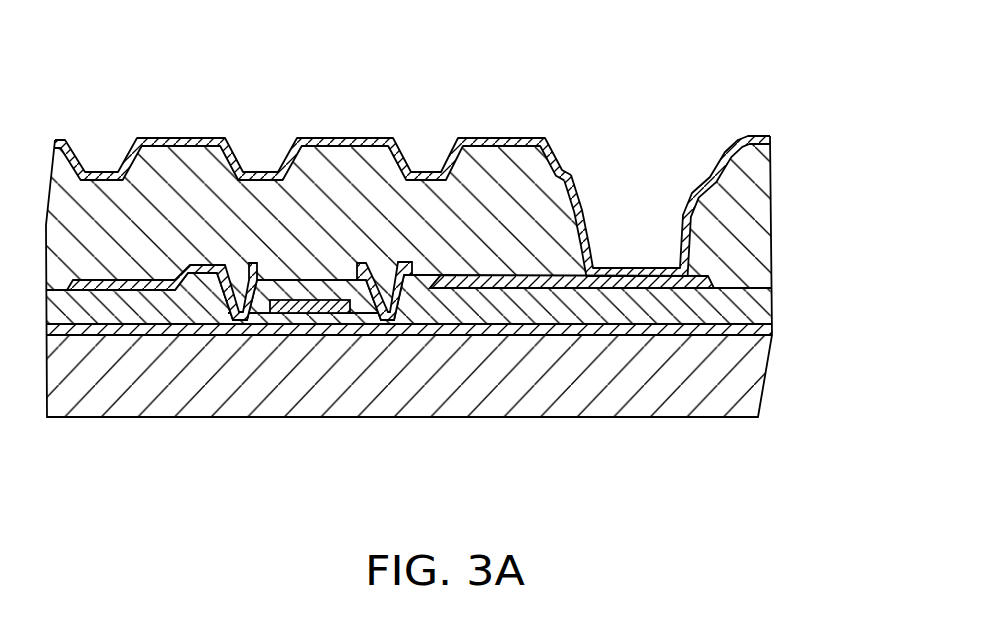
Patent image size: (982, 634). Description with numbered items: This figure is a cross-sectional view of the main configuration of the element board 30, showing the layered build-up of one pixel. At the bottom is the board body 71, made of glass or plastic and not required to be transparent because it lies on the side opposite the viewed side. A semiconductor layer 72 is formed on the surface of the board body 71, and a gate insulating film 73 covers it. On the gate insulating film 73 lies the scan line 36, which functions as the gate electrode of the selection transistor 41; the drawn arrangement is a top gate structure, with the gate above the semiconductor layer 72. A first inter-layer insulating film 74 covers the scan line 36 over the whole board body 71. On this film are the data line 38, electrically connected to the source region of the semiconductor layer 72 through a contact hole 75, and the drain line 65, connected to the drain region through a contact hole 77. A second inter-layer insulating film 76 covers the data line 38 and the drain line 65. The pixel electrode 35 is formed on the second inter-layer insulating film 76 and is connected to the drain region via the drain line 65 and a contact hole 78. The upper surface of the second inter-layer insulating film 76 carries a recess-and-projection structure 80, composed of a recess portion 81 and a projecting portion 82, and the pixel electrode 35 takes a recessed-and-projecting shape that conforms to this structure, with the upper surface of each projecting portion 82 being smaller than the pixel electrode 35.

The element board 30 is at (835, 135).
The pixel electrode 35 is at (495, 138).
The scan line 36 is at (288, 314).
The data line 38 is at (140, 292).
The selection transistor 41 is at (349, 367).
The drain line 65 is at (467, 290).
The board body 71 is at (752, 393).
The semiconductor layer 72 is at (311, 330).
The gate insulating film 73 is at (578, 330).
The first inter-layer insulating film 74 is at (752, 299).
The contact hole 75 is at (236, 322).
The second inter-layer insulating film 76 is at (752, 197).
The contact hole 77 is at (393, 322).
The contact hole 78 is at (588, 232).
The recess-and-projection structure 80 is at (245, 48).
The recess portion 81 is at (262, 172).
The projecting portion 82 is at (337, 138).